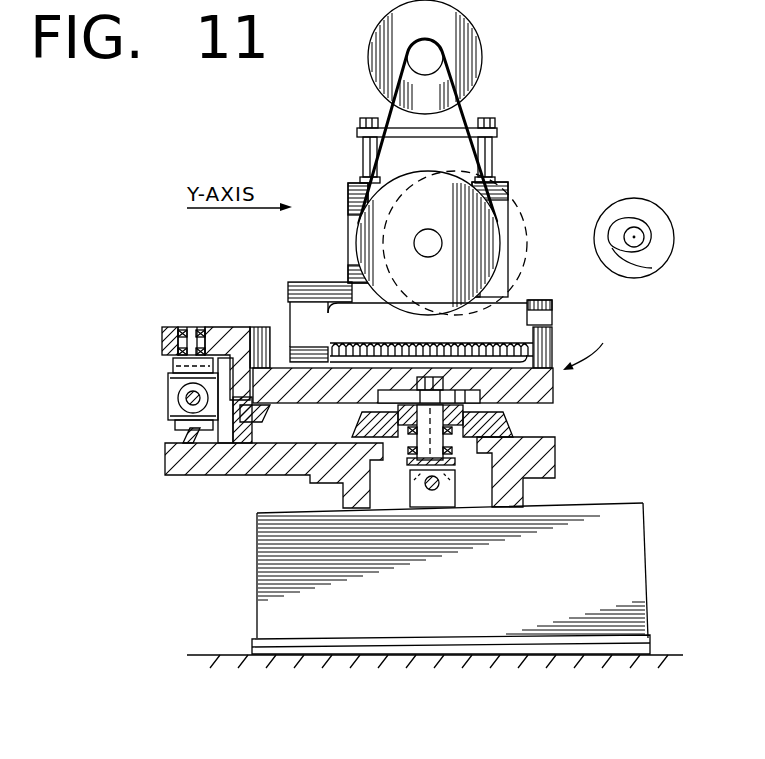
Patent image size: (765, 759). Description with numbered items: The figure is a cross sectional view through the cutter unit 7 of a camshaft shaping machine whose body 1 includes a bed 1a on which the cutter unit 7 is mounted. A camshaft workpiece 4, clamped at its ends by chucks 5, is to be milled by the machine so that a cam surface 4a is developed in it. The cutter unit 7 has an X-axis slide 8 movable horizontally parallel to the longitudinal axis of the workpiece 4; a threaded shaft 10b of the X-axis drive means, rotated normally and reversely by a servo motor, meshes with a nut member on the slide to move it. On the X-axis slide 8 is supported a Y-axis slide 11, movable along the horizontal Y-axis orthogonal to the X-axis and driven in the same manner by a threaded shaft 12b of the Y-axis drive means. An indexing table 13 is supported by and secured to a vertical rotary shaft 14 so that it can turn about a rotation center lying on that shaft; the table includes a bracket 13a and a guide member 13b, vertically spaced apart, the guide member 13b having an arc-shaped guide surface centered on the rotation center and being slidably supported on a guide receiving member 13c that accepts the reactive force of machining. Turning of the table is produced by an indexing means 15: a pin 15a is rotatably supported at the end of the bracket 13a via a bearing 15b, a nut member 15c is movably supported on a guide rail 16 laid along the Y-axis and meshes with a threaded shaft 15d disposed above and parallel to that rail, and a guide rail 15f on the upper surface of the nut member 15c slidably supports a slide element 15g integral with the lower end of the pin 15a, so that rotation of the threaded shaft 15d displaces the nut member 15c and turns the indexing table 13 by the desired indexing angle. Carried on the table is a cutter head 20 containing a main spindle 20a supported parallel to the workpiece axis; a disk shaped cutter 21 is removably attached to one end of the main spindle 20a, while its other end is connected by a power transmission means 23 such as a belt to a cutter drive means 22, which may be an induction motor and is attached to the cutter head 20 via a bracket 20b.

The body 1 is at (253, 585).
The bed 1a is at (632, 533).
The camshaft workpiece 4 is at (645, 235).
The cam surface 4a is at (652, 266).
The chuck 5 is at (642, 200).
The cutter unit 7 is at (476, 336).
The X-axis slide 8 is at (222, 463).
The threaded shaft 10b is at (431, 490).
The Y-axis slide 11 is at (342, 285).
The threaded shaft 12b is at (503, 340).
The indexing table 13 is at (532, 383).
The bracket 13a is at (238, 327).
The guide member 13b is at (270, 413).
The guide receiving member 13c is at (251, 443).
The rotary shaft 14 is at (432, 442).
The indexing means 15 is at (152, 424).
The pin 15a is at (193, 327).
The bearing 15b is at (217, 327).
The nut member 15c is at (172, 382).
The threaded shaft 15d is at (180, 400).
The guide rail 15f is at (175, 363).
The slide element 15g is at (160, 355).
The guide rail 16 is at (177, 433).
The cutter head 20 is at (495, 189).
The main spindle 20a is at (414, 238).
The bracket 20b is at (497, 127).
The disk shaped cutter 21 is at (518, 243).
The cutter drive means 22 is at (465, 40).
The power transmission means 23 is at (480, 82).